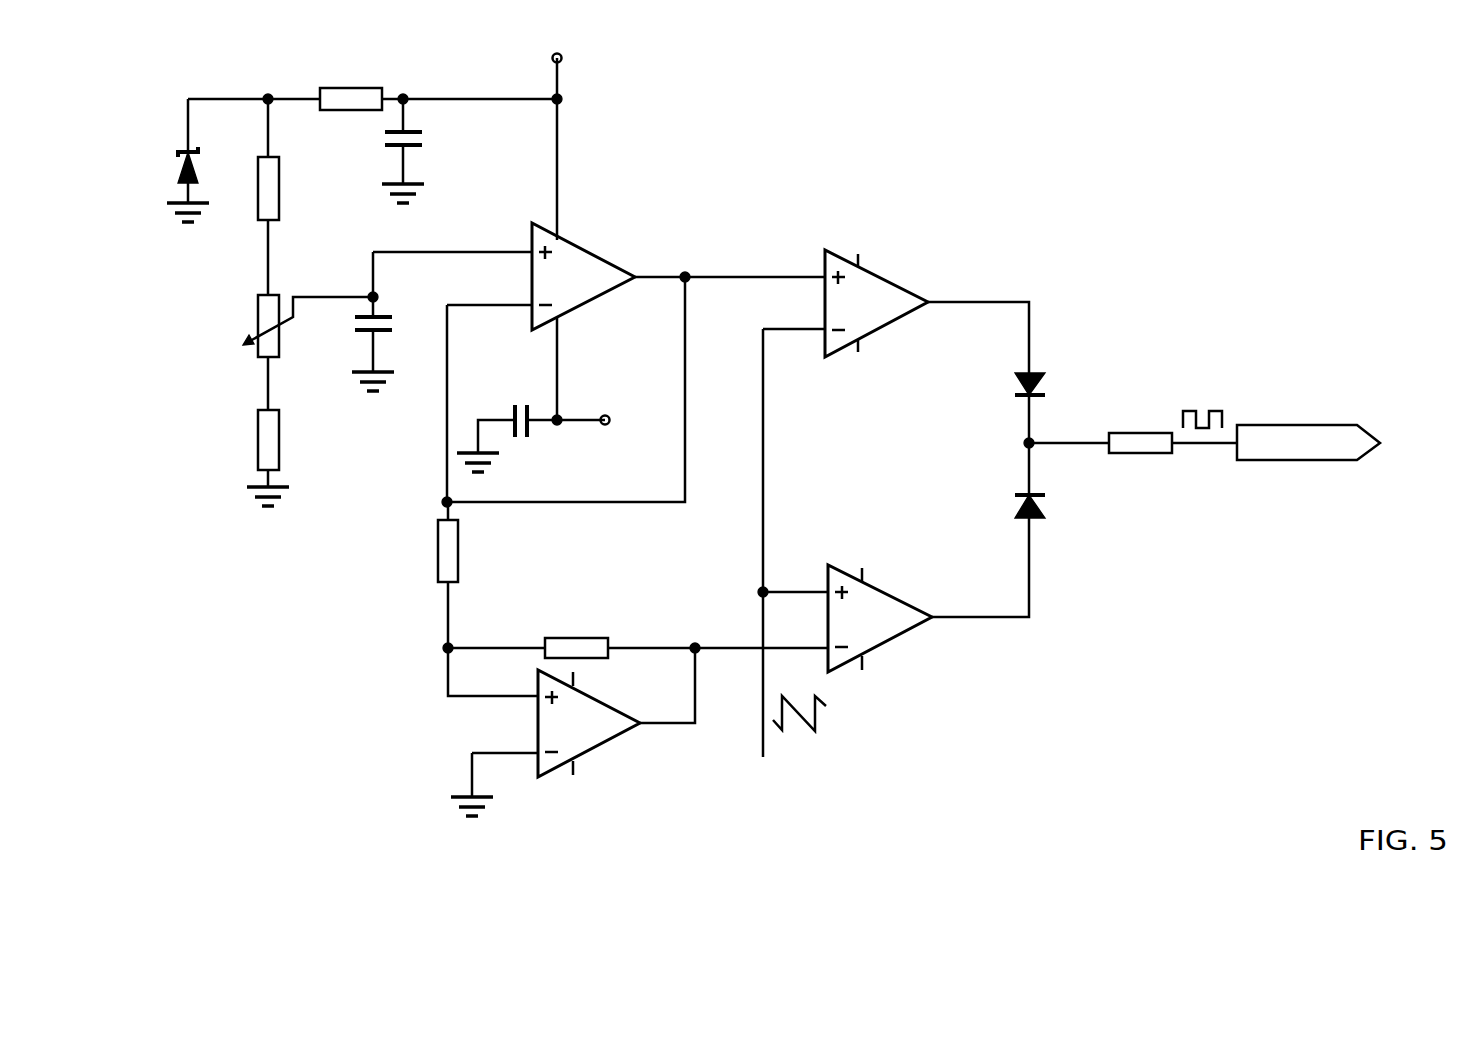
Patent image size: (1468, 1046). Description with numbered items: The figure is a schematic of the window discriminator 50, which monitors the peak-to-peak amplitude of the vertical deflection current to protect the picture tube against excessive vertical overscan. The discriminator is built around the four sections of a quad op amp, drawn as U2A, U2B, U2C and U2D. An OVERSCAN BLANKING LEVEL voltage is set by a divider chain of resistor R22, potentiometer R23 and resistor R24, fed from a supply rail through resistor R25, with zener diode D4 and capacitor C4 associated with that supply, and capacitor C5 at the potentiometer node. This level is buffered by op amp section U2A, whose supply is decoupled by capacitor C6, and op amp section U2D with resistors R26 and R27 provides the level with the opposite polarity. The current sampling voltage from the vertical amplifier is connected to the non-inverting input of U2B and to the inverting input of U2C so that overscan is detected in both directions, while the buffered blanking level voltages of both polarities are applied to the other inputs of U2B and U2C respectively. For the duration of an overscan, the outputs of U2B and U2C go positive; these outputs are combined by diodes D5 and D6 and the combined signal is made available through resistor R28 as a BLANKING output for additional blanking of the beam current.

The window discriminator 50 is at (668, 568).
The resistor 82K R22 is at (293, 197).
The overscan blanking level potentiometer 4k7 R23 is at (308, 352).
The resistor 5.6K R24 is at (290, 458).
The resistor 1K R25 is at (351, 70).
The resistor 12K R26 is at (426, 577).
The resistor 12K R27 is at (528, 618).
The resistor R28 is at (1133, 413).
The capacitor 100n C4 is at (428, 151).
The capacitor 100n C5 is at (442, 321).
The capacitor 100n C6 is at (533, 408).
The zener diode 5.1V D4 is at (175, 160).
The diode D5 is at (985, 426).
The diode D6 is at (985, 548).
The operational amplifier section U2A is at (633, 347).
The operational amplifier section U2B is at (896, 292).
The operational amplifier section U2C is at (781, 631).
The operational amplifier section U2D is at (571, 732).